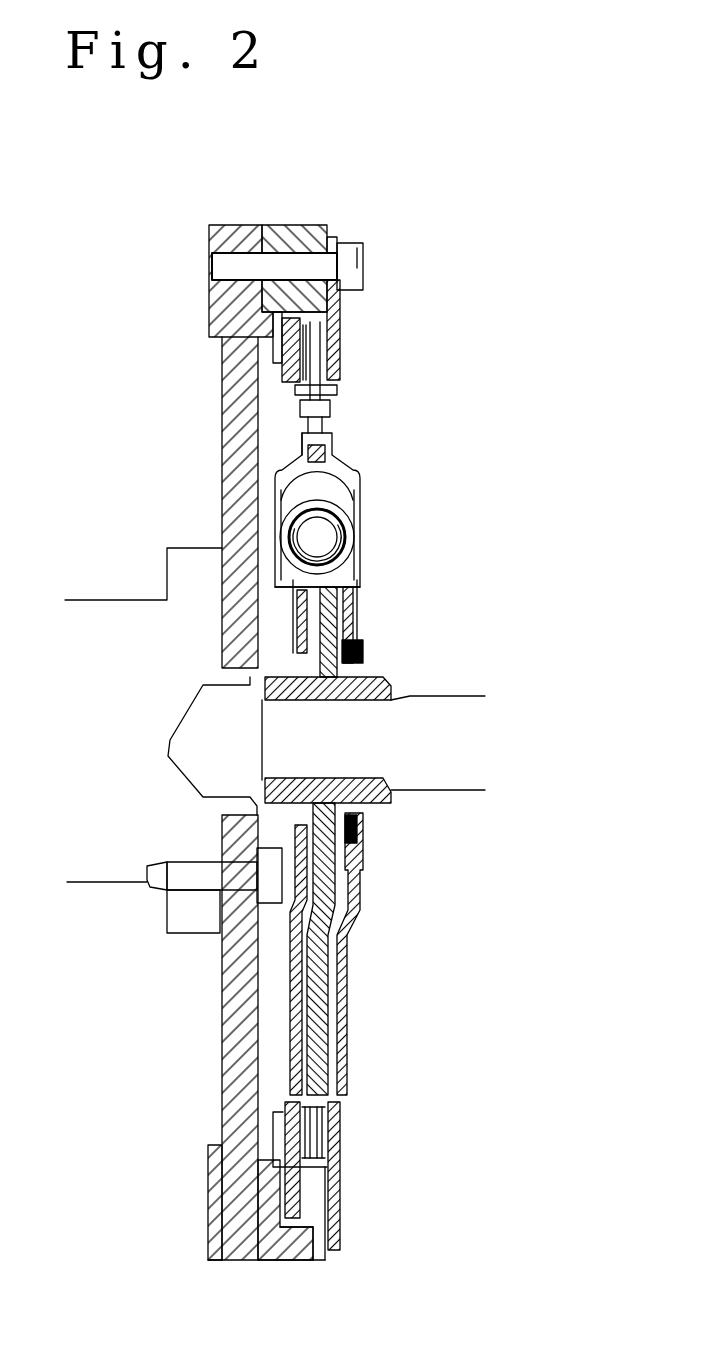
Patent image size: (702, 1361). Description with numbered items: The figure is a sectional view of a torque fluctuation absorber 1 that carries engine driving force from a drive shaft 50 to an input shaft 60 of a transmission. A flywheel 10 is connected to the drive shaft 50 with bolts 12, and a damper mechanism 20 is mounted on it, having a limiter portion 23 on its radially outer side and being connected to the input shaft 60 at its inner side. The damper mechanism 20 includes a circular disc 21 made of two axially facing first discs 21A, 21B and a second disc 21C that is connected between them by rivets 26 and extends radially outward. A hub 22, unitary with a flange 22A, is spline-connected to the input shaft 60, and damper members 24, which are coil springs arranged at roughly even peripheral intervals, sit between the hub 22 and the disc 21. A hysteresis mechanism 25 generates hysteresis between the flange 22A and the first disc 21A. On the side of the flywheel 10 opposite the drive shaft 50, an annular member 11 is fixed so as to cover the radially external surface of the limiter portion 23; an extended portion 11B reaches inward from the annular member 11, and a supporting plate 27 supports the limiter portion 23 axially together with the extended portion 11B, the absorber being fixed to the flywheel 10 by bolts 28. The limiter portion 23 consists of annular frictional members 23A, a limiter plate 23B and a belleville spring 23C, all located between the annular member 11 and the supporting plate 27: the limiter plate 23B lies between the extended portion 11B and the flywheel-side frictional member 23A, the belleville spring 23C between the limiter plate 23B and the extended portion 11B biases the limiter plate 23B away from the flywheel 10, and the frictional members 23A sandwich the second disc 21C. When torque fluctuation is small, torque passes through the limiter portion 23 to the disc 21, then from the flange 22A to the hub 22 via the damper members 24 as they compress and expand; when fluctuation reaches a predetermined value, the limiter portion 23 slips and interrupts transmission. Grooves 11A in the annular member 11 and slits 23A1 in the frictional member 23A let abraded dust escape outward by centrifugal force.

The torque fluctuation absorber 1 is at (520, 240).
The flywheel 10 is at (237, 403).
The annular member 11 is at (305, 225).
The grooves 11A is at (328, 1258).
The extended portion 11B is at (266, 1157).
The bolts 12 is at (313, 908).
The damper mechanism 20 is at (412, 517).
The circular disc 21 is at (352, 432).
The first disc 21A is at (338, 450).
The first disc 21B is at (292, 447).
The second disc 21C is at (322, 358).
The hub 22 is at (376, 683).
The flange 22A is at (285, 883).
The limiter portion 23 is at (398, 338).
The annular frictional members 23A is at (343, 327).
The slits 23A1 is at (340, 1147).
The limiter plate 23B is at (227, 313).
The belleville spring 23C is at (280, 355).
The damper members 24 is at (352, 543).
The hysteresis mechanism 25 is at (382, 835).
The rivets 26 is at (332, 410).
The supporting plate 27 is at (334, 242).
The bolts 28 is at (357, 262).
The drive shaft 50 is at (135, 638).
The input shaft 60 is at (428, 725).